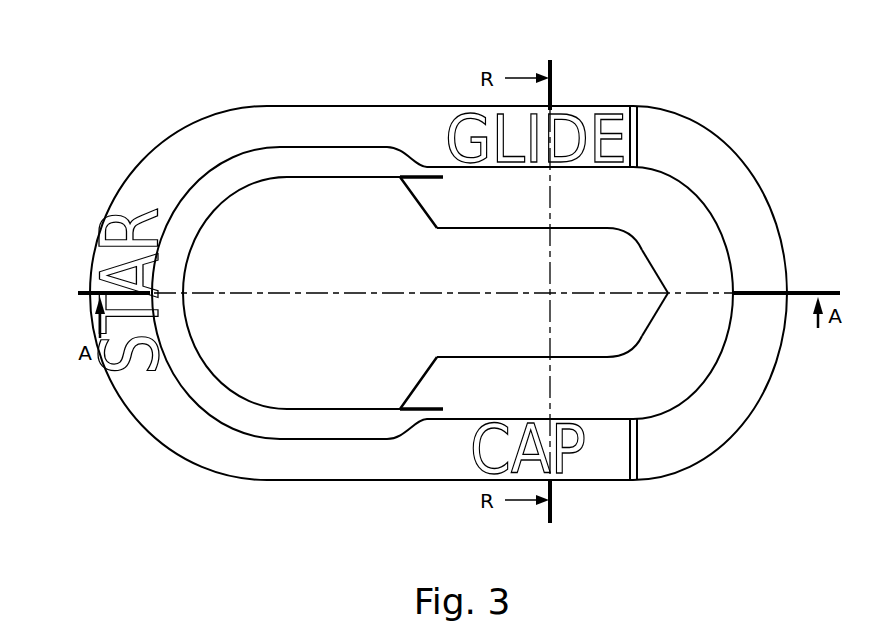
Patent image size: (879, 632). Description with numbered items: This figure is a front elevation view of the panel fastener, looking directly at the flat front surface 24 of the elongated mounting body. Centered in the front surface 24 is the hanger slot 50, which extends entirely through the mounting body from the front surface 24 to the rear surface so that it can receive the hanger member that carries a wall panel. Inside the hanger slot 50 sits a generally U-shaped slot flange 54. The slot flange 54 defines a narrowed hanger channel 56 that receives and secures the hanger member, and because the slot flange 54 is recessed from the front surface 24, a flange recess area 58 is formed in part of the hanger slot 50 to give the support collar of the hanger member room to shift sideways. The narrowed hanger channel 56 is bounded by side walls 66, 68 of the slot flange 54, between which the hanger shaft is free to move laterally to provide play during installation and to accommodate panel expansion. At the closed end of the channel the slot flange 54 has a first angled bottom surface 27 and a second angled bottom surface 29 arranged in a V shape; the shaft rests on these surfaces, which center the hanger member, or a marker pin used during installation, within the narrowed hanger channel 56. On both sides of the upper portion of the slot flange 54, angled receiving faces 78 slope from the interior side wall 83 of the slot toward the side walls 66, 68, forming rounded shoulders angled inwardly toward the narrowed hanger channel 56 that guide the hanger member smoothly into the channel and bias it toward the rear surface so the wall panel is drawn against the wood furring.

The front surface 24 is at (668, 134).
The first angled bottom surface 27 is at (646, 328).
The second angled bottom surface 29 is at (646, 258).
The hanger slot 50 is at (238, 243).
The slot flange 54 is at (673, 230).
The narrowed hanger channel 56 is at (502, 262).
The flange recess area 58 is at (690, 342).
The side wall 66 is at (555, 230).
The side wall 68 is at (472, 350).
The angled receiving face 78 is at (420, 207).
The interior side wall 83 is at (350, 177).